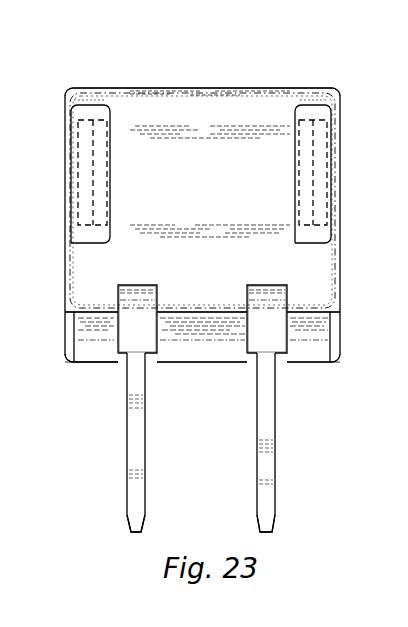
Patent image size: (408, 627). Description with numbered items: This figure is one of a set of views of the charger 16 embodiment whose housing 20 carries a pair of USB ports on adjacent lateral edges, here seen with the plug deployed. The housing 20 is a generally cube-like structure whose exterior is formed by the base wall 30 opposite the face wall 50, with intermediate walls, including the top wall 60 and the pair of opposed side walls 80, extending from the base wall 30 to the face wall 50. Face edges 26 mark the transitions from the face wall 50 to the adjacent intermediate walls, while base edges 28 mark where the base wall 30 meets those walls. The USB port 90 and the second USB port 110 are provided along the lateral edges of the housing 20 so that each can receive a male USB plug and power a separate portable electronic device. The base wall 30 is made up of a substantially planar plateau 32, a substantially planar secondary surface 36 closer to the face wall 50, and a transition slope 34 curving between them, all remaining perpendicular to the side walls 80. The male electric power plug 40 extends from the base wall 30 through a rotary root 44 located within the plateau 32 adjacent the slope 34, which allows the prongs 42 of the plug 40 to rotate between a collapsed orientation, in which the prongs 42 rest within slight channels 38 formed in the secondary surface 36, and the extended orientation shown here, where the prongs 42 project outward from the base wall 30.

The charger 16 is at (142, 63).
The housing 20 is at (50, 200).
The face edges 26 is at (66, 87).
The base edges 28 is at (67, 364).
The base wall 30 is at (188, 364).
The plateau 32 is at (93, 364).
The transition slope 34 is at (87, 342).
The secondary surface 36 is at (305, 314).
The channels 38 is at (160, 294).
The male electric power plug 40 is at (303, 427).
The prongs 42 is at (147, 521).
The rotary root 44 is at (147, 336).
The face wall 50 is at (244, 88).
The top wall 60 is at (226, 181).
The side walls 80 is at (68, 265).
The USB port 90 is at (315, 154).
The second USB port 110 is at (92, 194).